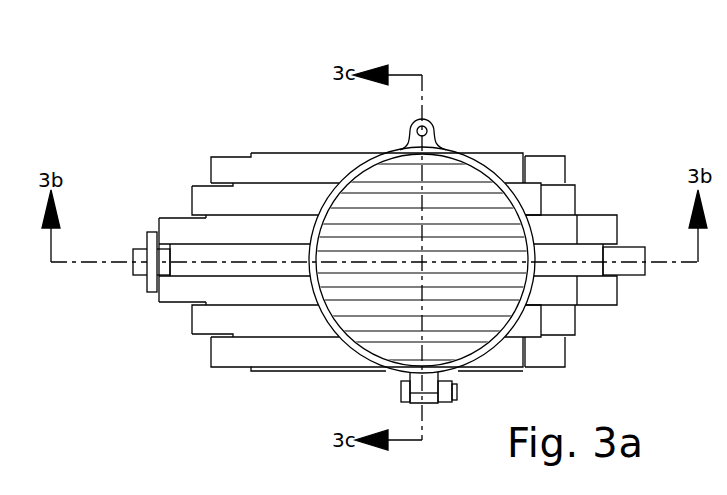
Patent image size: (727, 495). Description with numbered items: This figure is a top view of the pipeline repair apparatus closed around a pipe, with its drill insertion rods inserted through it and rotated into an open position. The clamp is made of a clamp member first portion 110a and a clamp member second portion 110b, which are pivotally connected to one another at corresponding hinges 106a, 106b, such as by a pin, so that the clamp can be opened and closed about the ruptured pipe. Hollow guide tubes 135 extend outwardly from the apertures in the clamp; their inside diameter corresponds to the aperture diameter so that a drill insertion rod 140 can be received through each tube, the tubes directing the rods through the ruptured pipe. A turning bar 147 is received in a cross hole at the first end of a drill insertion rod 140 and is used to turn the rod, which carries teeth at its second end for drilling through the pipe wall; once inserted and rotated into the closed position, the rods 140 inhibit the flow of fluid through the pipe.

The hinge 106a is at (403, 128).
The hinge 106b is at (442, 125).
The clamp member first portion 110a is at (347, 172).
The clamp member second portion 110b is at (497, 170).
The hollow guide tubes 135 is at (303, 371).
The drill insertion rods 140 is at (233, 368).
The turning bar 147 is at (153, 232).